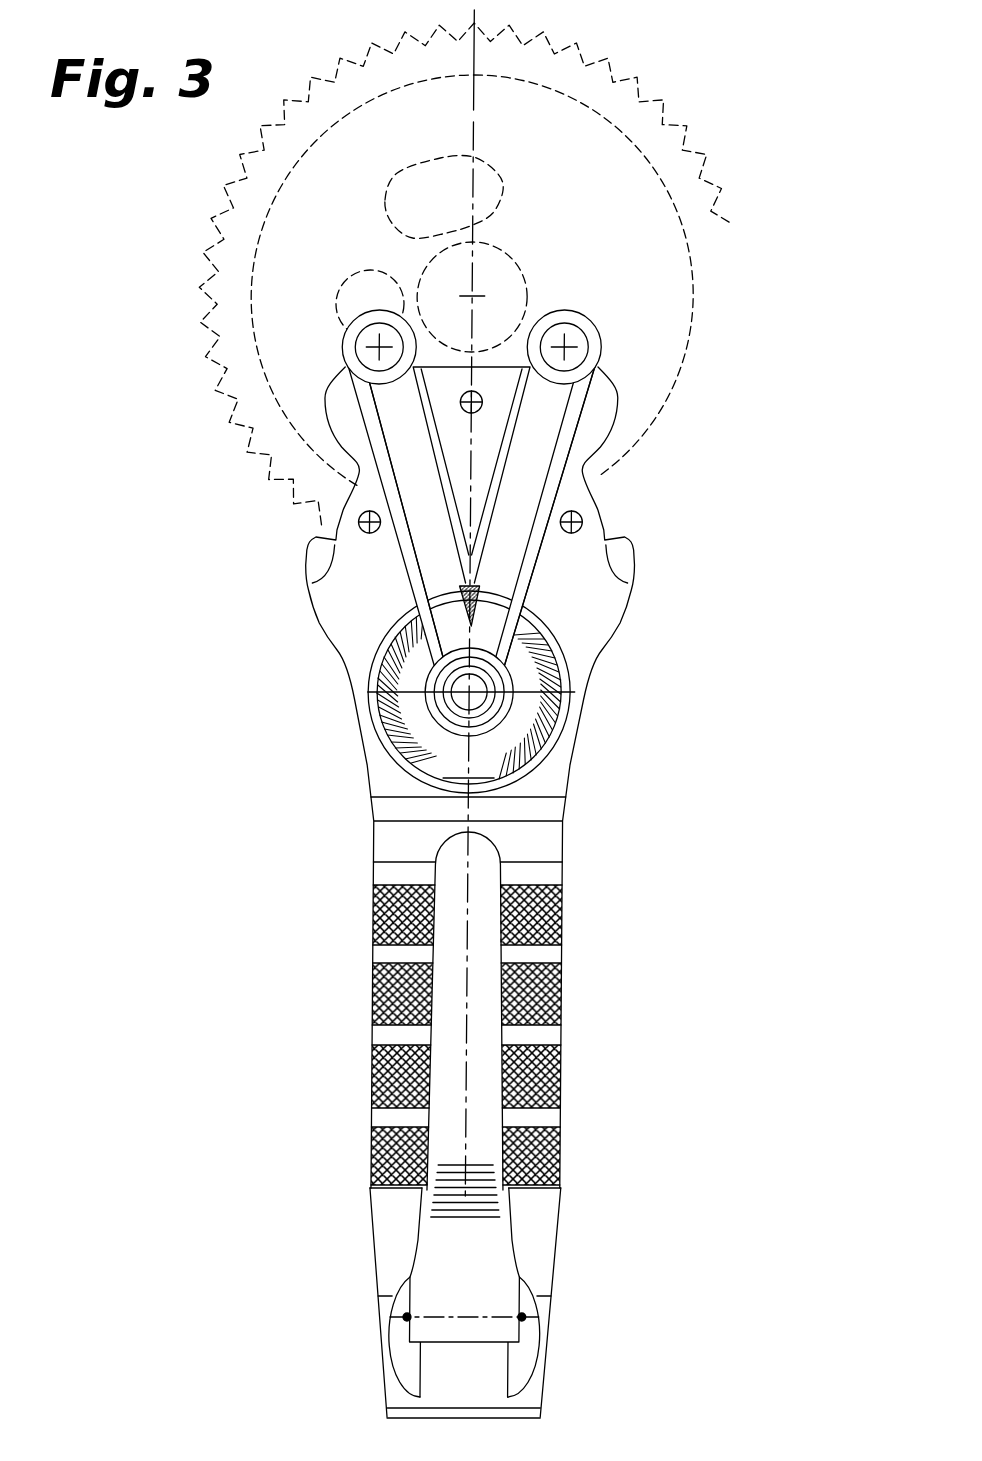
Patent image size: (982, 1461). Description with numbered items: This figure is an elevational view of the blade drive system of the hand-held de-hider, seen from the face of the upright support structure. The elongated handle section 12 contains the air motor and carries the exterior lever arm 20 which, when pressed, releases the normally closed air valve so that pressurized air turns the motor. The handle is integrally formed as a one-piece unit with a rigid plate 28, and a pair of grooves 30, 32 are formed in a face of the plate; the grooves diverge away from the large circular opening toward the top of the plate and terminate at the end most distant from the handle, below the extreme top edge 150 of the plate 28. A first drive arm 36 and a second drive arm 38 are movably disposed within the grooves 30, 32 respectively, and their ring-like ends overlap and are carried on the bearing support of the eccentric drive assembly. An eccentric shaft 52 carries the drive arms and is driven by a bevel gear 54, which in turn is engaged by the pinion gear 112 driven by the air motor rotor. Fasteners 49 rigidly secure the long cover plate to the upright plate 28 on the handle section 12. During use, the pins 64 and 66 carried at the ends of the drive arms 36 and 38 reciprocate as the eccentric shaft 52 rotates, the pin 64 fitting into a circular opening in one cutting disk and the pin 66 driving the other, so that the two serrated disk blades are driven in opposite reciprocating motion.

The handle section 12 is at (572, 956).
The lever arm 20 is at (495, 1037).
The rigid plate 28 is at (505, 402).
The groove 30 is at (554, 487).
The groove 32 is at (411, 570).
The first drive arm 36 is at (546, 453).
The second drive arm 38 is at (403, 445).
The fasteners 49 is at (460, 397).
The eccentric shaft 52 is at (481, 700).
The bevel gear 54 is at (548, 648).
The pin 64 is at (588, 340).
The pin 66 is at (363, 334).
The pinion gear 112 is at (496, 770).
The top edge 150 is at (502, 349).